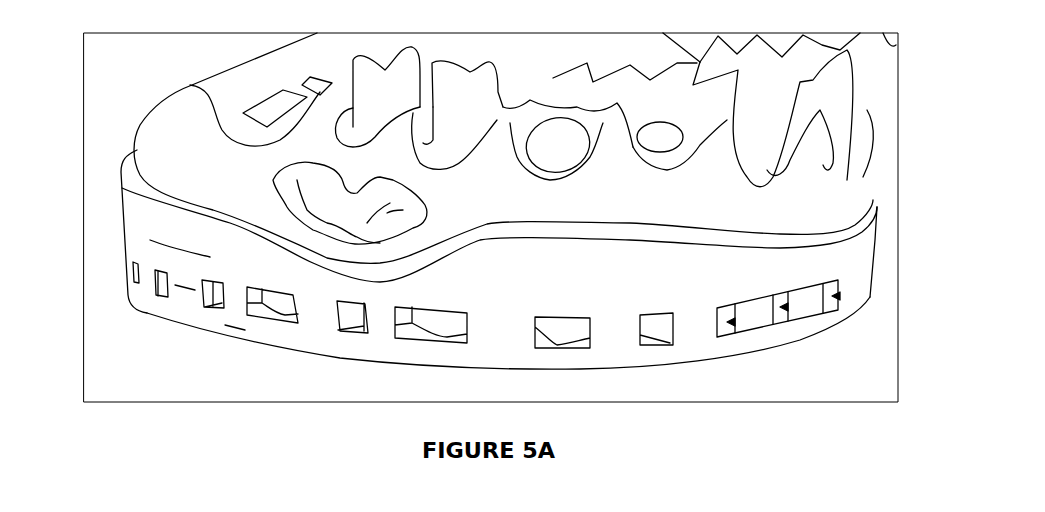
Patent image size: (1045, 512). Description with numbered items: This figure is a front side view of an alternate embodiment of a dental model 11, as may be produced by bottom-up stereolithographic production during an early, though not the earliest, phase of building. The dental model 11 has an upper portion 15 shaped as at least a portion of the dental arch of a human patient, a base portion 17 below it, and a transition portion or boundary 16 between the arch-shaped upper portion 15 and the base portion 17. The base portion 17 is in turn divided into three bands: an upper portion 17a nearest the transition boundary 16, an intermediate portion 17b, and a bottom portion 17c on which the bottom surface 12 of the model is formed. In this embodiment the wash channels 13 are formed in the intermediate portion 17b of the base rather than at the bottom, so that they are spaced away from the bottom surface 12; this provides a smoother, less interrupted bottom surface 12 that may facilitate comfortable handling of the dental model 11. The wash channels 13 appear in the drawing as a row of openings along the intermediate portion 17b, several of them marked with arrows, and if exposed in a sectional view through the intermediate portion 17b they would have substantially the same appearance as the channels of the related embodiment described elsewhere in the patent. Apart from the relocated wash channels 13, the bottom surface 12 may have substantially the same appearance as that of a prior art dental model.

The dental model 11 is at (820, 152).
The bottom surface 12 is at (340, 358).
The wash channels 13 is at (733, 322).
The upper portion 15 is at (320, 193).
The transition portion 16 is at (333, 262).
The base portion 17 is at (712, 275).
The upper portion of base portion 17a is at (190, 251).
The intermediate portion 17b is at (188, 288).
The bottom portion 17c is at (235, 327).